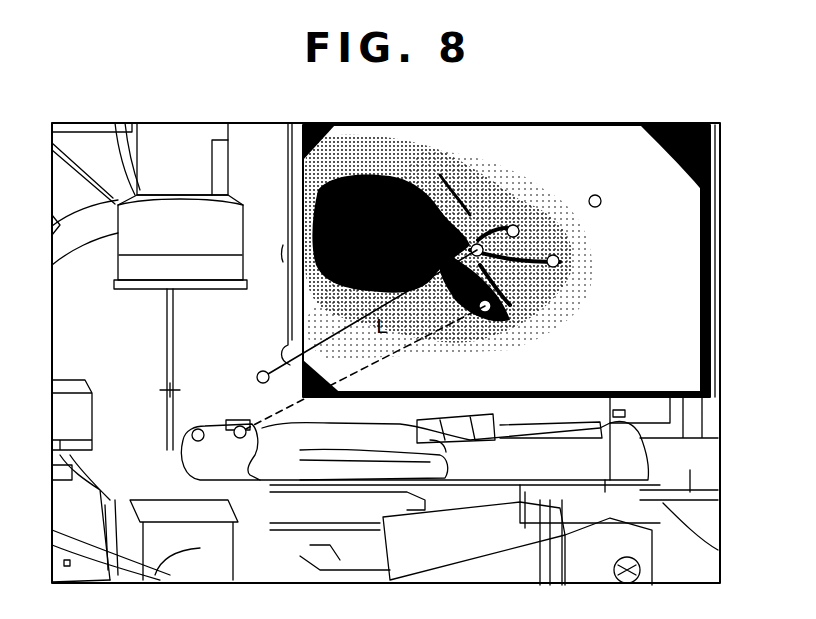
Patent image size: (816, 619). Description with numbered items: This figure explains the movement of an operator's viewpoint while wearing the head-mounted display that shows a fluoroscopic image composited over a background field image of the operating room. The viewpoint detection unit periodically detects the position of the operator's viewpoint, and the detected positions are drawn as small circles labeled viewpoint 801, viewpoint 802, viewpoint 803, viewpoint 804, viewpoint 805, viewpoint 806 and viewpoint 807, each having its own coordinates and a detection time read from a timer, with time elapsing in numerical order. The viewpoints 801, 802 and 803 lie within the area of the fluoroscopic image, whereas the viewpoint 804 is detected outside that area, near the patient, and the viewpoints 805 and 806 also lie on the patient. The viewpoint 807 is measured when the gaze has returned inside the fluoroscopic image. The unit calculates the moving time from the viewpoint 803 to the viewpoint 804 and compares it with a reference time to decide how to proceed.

The viewpoint 801 is at (595, 195).
The viewpoint 802 is at (553, 267).
The viewpoint 803 is at (513, 225).
The viewpoint 804 is at (261, 371).
The viewpoint 805 is at (197, 429).
The viewpoint 806 is at (239, 426).
The viewpoint 807 is at (485, 312).